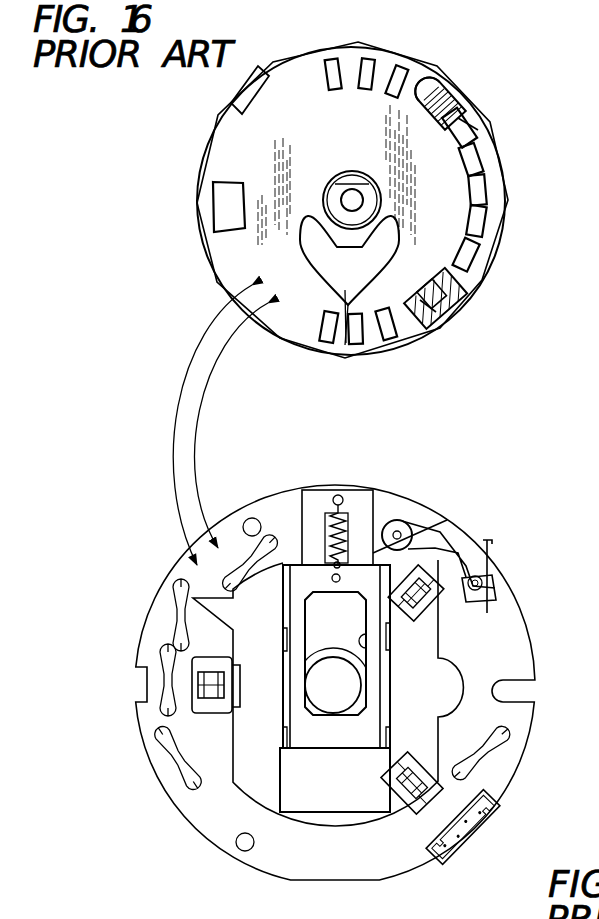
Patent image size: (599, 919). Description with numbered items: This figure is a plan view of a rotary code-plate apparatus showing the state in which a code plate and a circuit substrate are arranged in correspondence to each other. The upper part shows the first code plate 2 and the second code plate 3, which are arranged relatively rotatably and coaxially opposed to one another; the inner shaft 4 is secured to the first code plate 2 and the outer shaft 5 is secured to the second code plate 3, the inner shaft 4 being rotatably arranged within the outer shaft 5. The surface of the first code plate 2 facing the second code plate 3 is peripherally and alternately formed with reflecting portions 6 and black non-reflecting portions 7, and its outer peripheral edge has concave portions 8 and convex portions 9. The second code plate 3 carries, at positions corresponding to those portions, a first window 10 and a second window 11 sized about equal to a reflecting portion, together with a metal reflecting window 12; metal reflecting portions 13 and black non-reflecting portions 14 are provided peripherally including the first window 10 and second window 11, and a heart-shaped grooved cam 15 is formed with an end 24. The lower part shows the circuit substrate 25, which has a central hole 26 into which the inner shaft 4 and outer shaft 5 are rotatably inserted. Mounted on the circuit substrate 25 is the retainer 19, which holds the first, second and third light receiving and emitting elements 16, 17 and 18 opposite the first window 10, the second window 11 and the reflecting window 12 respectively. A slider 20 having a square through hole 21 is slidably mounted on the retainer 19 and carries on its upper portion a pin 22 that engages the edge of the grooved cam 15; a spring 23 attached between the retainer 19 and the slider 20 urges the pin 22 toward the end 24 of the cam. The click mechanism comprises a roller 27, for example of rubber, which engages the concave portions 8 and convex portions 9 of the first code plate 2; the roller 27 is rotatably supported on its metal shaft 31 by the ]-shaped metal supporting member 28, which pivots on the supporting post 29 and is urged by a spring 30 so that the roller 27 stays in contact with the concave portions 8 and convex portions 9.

The first code plate 2 is at (347, 40).
The second code plate 3 is at (268, 102).
The inner shaft 4 is at (345, 198).
The outer shaft 5 is at (348, 200).
The reflecting portions 6 is at (447, 79).
The non-reflecting portions 7 is at (456, 105).
The concave portions 8 is at (312, 60).
The convex portions 9 is at (280, 66).
The first window 10 is at (438, 324).
The second window 11 is at (480, 124).
The reflecting window 12 is at (220, 216).
The reflecting portions 13 is at (400, 64).
The non-reflecting portions 14 is at (420, 72).
The heart-shaped grooved cam 15 is at (322, 281).
The first light receiving and emitting element 16 is at (420, 612).
The second light receiving and emitting element 17 is at (405, 798).
The third light receiving and emitting element 18 is at (208, 712).
The retainer 19 is at (246, 806).
The slider 20 is at (312, 757).
The square through hole 21 is at (368, 647).
The pin 22 is at (332, 578).
The spring 23 is at (338, 530).
The end of the grooved cam 24 is at (345, 346).
The circuit substrate 25 is at (245, 870).
The hole 26 is at (338, 708).
The roller 27 is at (402, 522).
The supporting member 28 is at (441, 531).
The supporting post 29 is at (493, 582).
The spring 30 is at (487, 540).
The metal shaft 31 is at (394, 530).